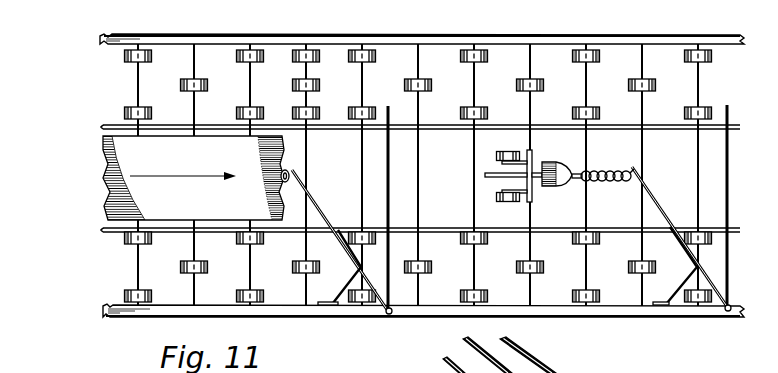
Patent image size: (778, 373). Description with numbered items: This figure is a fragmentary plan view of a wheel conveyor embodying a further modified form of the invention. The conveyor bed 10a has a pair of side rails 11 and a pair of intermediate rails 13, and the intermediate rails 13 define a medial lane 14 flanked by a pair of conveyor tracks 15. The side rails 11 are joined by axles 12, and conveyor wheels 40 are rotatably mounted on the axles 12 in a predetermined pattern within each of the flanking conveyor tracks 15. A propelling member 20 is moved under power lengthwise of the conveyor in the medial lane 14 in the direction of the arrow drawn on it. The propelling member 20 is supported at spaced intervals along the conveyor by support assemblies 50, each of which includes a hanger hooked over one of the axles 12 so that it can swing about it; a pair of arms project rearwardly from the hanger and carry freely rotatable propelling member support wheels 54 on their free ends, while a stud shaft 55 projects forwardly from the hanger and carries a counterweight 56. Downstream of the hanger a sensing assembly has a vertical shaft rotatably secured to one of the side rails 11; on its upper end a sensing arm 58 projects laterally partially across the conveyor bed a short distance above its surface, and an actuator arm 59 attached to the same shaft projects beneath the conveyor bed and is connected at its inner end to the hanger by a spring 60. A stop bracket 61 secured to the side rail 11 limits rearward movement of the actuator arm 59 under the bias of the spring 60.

The conveyor bed 10a is at (101, 306).
The side rails 11 is at (108, 38).
The axles 12 is at (418, 191).
The intermediate rails 13 is at (110, 126).
The medial lane 14 is at (97, 139).
The conveyor tracks 15 is at (119, 77).
The propelling member 20 is at (104, 202).
The conveyor wheels 40 is at (292, 84).
The support assemblies 50 is at (533, 194).
The propelling member support wheels 54 is at (492, 153).
The stud shaft 55 is at (577, 186).
The counterweight 56 is at (561, 167).
The sensing arm 58 is at (390, 106).
The actuator arm 59 is at (321, 201).
The spring 60 is at (605, 171).
The bracket 61 is at (340, 292).